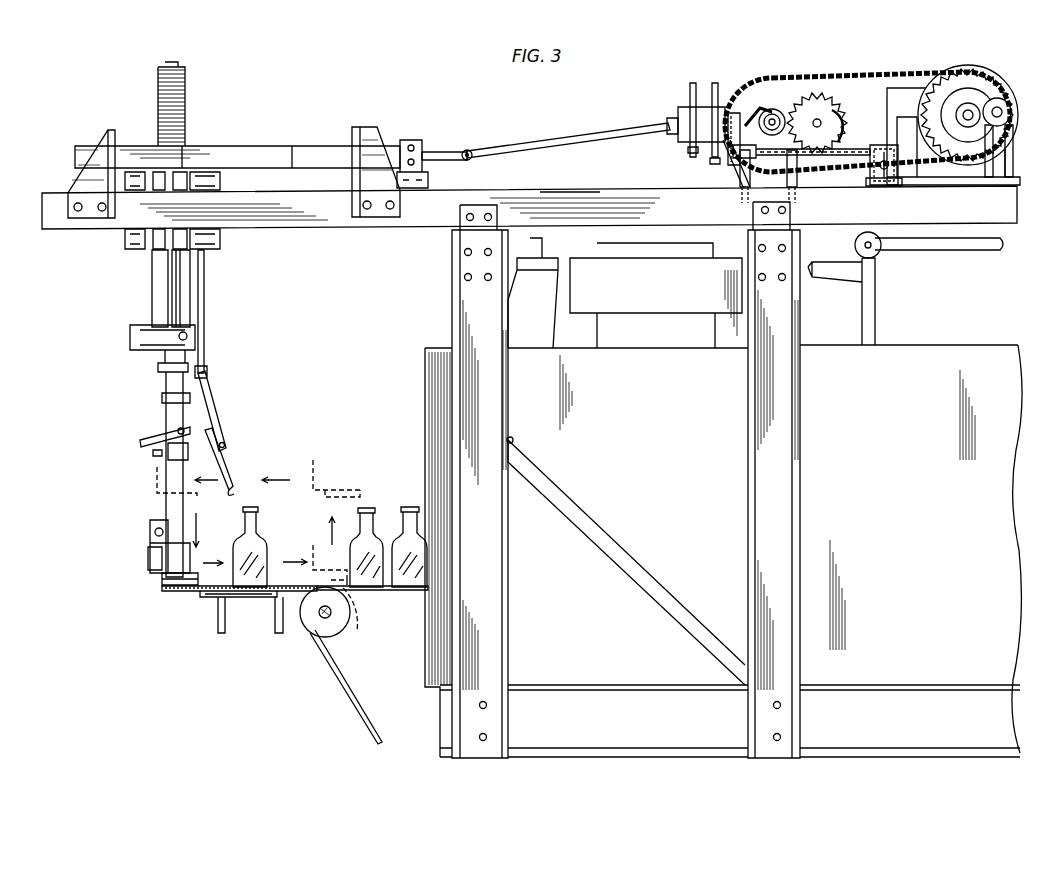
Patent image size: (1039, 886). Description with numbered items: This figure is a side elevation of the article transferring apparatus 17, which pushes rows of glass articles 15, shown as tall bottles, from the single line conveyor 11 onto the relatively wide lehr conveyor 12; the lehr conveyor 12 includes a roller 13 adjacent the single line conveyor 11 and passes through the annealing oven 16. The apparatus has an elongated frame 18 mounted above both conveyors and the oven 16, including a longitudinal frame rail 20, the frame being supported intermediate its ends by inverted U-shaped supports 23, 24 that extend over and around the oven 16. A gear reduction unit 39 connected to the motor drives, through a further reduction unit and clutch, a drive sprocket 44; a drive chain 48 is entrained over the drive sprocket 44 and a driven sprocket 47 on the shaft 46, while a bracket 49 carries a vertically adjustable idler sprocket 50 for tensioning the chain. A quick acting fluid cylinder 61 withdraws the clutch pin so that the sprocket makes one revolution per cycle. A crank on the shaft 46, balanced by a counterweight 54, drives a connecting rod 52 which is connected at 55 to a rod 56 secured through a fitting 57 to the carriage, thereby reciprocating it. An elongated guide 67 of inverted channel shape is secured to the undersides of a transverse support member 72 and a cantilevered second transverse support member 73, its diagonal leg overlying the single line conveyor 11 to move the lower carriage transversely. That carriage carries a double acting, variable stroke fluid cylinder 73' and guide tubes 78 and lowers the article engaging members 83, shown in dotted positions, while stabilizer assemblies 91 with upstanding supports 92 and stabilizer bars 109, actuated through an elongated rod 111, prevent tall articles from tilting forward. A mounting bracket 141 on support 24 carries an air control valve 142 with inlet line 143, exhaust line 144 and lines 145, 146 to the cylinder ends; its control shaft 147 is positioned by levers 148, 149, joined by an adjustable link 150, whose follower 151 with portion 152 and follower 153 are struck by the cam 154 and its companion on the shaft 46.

The single line conveyor 11 is at (272, 588).
The lehr conveyor 12 is at (392, 590).
The roller 13 is at (318, 628).
The article 15 is at (262, 540).
The oven 16 is at (428, 355).
The article transferring apparatus 17 is at (365, 155).
The elongated frame 18 is at (376, 232).
The longitudinal frame rail 20 is at (556, 192).
The inverted U-shaped support 23 is at (495, 420).
The inverted U-shaped support 24 is at (800, 453).
The gear reduction unit 39 is at (953, 102).
The drive sprocket 44 is at (935, 118).
The shaft 46 is at (786, 120).
The driven sprocket 47 is at (782, 112).
The drive chain 48 is at (886, 70).
The bracket 49 is at (884, 186).
The idler sprocket 50 is at (870, 152).
The connecting rod 52 is at (540, 134).
The counterweight 54 is at (834, 114).
The connection 55 is at (472, 158).
The rod 56 is at (467, 150).
The fitting 57 is at (423, 141).
The quick acting fluid cylinder 61 is at (1009, 94).
The elongated guide 67 is at (262, 144).
The transverse support member 72 is at (97, 143).
The second transverse support member 73 is at (378, 157).
The fluid cylinder 73' is at (127, 288).
The guide tube 78 is at (176, 276).
The article engaging member 83 is at (190, 493).
The stabilizer assembly 91 is at (231, 432).
The upstanding support 92 is at (162, 497).
The stabilizer bar 109 is at (234, 490).
The elongated rod 111 is at (206, 336).
The mounting bracket 141 is at (737, 170).
The air control valve 142 is at (678, 102).
The inlet line 143 is at (688, 150).
The exhaust line 144 is at (710, 162).
The line 145 is at (693, 83).
The line 146 is at (716, 83).
The control shaft 147 is at (678, 118).
The lever 148 is at (740, 190).
The lever 149 is at (797, 193).
The adjustable link 150 is at (823, 158).
The follower 151 is at (725, 136).
The follower portion 152 is at (733, 113).
The follower 153 is at (838, 125).
The cam 154 is at (765, 108).